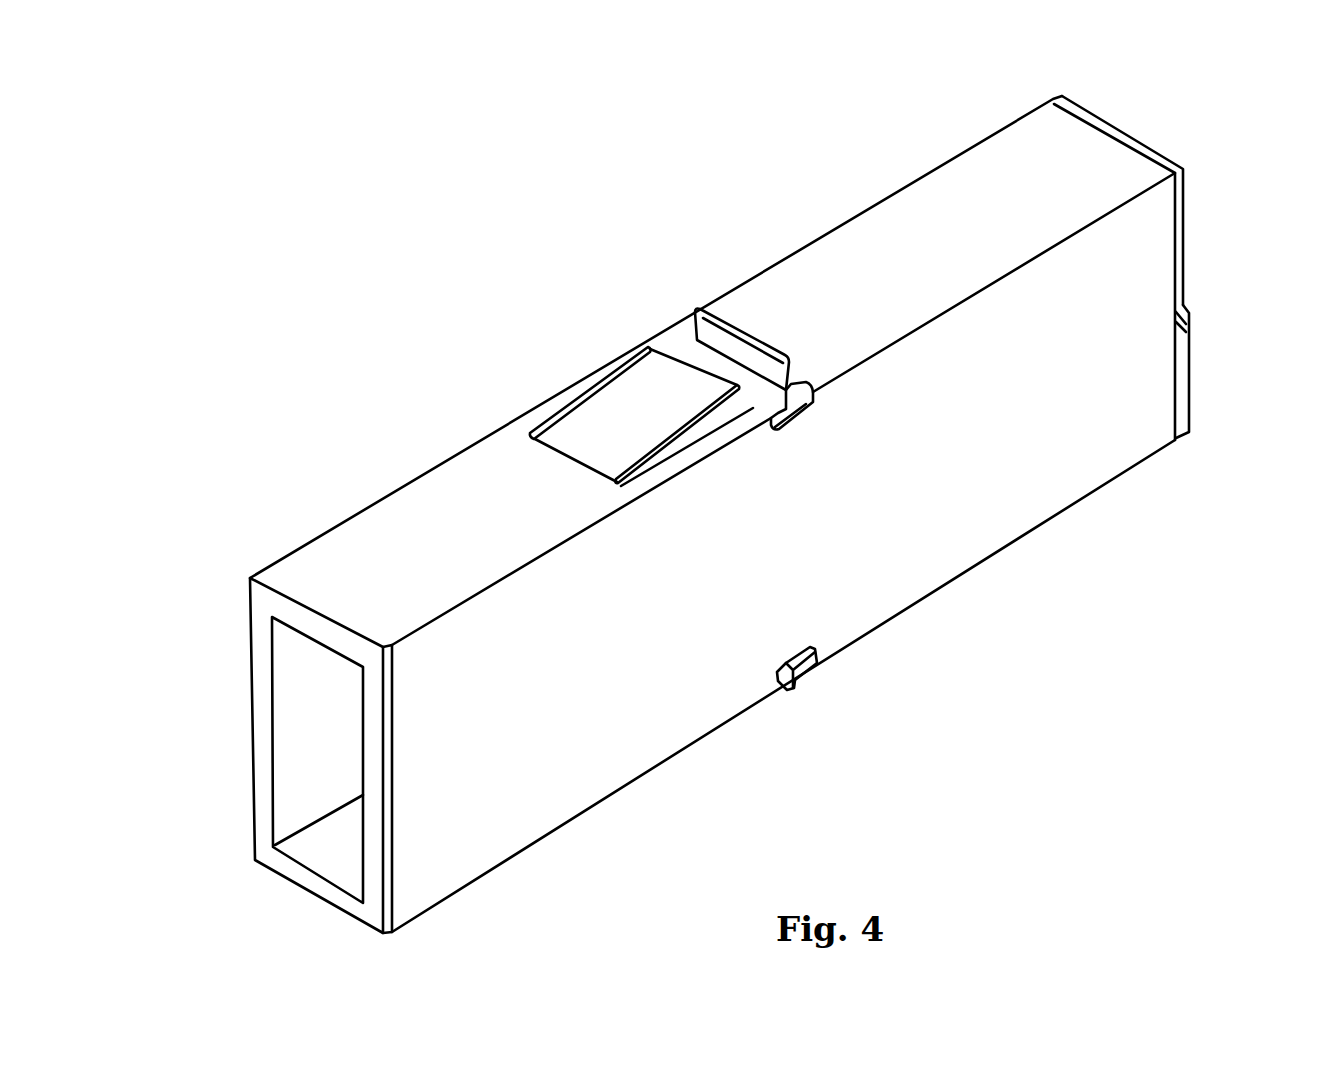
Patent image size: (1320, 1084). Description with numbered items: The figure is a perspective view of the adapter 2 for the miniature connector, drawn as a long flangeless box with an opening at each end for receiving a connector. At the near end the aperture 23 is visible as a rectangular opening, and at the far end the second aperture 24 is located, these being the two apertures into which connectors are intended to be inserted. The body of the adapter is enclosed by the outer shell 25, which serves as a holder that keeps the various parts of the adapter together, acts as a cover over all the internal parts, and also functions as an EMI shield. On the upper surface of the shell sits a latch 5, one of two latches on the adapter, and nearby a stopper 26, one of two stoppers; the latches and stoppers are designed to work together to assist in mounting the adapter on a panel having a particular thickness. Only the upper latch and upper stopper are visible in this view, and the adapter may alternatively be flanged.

The adapter 2 is at (889, 168).
The latch 5 is at (622, 408).
The aperture 23 is at (297, 717).
The aperture 24 is at (1193, 227).
The outer shell 25 is at (1073, 442).
The stopper 26 is at (710, 330).